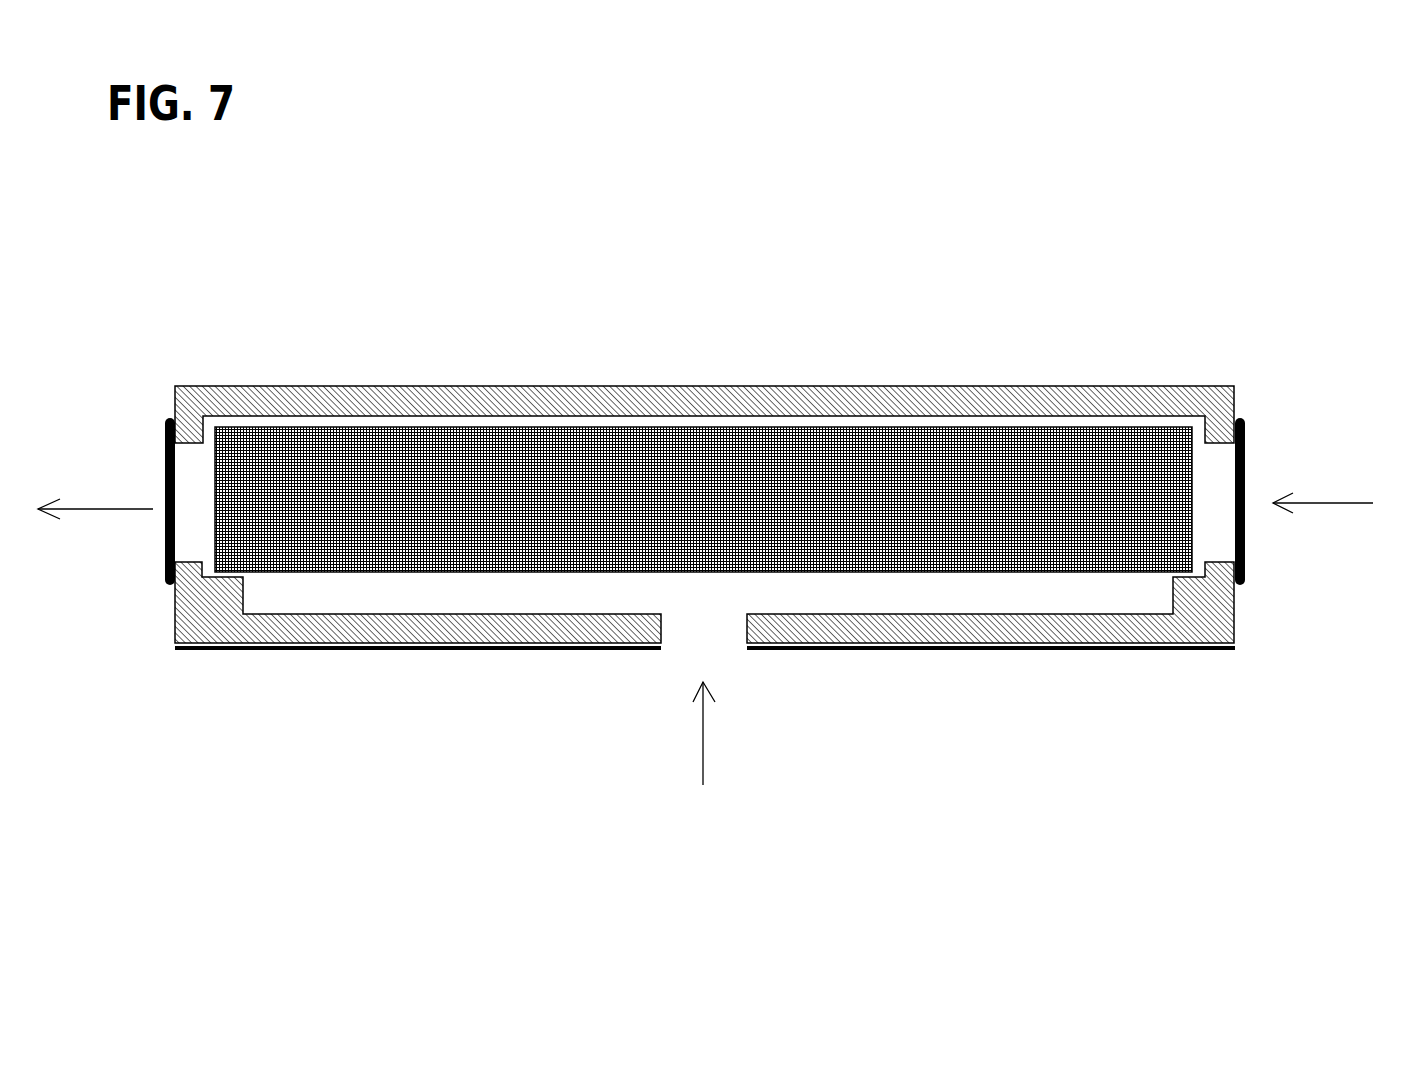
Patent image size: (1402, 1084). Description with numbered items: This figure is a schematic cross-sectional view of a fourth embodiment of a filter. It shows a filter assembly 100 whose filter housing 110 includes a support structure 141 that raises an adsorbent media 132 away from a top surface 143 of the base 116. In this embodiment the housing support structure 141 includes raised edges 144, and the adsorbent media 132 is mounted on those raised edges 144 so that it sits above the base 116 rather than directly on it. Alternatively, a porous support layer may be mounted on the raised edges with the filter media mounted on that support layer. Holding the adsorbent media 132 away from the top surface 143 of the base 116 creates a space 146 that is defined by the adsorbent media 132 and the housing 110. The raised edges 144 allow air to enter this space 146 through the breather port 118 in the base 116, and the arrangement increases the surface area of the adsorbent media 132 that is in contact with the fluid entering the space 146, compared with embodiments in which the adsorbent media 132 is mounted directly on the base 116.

The filter assembly 100 is at (705, 508).
The filter housing 110 is at (933, 386).
The adsorbent media 132 is at (990, 480).
The support structure 141 is at (203, 610).
The top surface 143 is at (380, 617).
The raised edges 144 is at (223, 595).
The base 116 is at (627, 627).
The breather port 118 is at (718, 640).
The space 146 is at (890, 595).